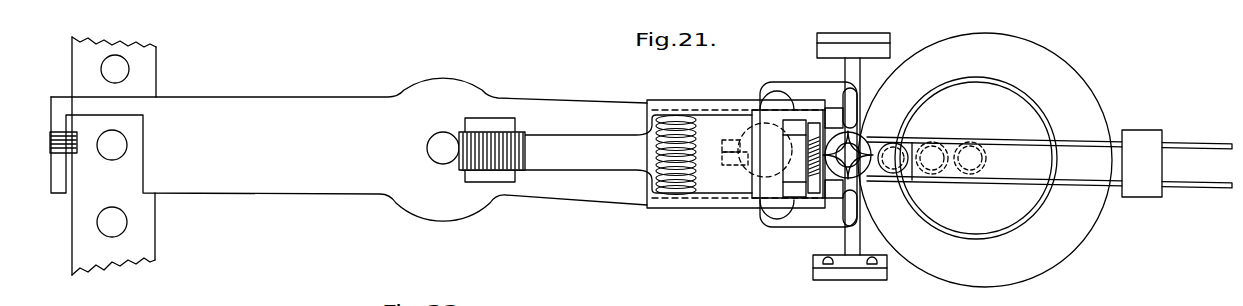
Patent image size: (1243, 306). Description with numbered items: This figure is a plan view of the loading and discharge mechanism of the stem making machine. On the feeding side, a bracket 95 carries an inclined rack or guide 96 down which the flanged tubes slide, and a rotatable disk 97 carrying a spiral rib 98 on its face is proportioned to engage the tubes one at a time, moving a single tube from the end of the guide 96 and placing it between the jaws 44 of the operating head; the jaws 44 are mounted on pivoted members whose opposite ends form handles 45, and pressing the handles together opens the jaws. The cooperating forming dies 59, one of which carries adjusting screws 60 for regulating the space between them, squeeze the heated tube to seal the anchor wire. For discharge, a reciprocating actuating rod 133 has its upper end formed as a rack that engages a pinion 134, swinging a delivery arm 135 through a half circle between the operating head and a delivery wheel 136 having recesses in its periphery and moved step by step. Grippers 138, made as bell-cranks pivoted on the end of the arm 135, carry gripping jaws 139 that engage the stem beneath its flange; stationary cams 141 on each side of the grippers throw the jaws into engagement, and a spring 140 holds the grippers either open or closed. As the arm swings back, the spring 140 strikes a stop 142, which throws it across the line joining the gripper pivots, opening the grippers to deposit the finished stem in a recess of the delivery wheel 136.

The jaws 44 is at (860, 201).
The handle 45 is at (673, 101).
The forming dies 59 is at (865, 33).
The adjusting screws 60 is at (822, 262).
The bracket 95 is at (1140, 198).
The rack or guide 96 is at (1194, 181).
The rotatable disk 97 is at (1083, 80).
The spiral rib 98 is at (1008, 90).
The actuating rod 133 is at (430, 148).
The pinion 134 is at (526, 150).
The delivery arm 135 is at (592, 129).
The delivery wheel 136 is at (165, 66).
The grippers 138 is at (813, 122).
The gripping jaws 139 is at (856, 132).
The spring 140 is at (809, 153).
The stationary cams 141 is at (790, 133).
The stop 142 is at (77, 153).